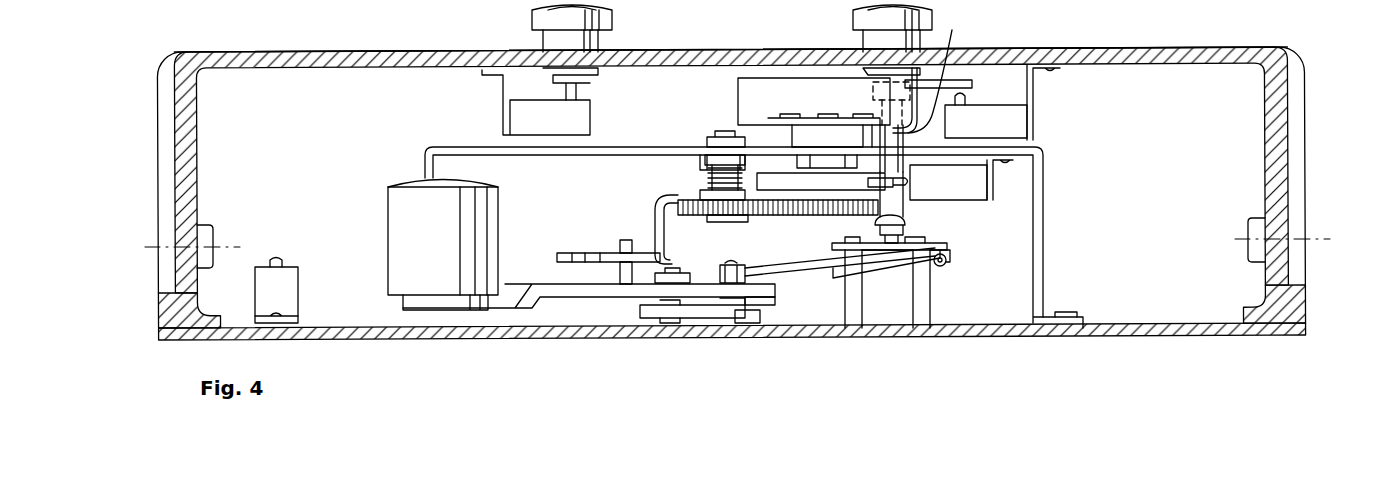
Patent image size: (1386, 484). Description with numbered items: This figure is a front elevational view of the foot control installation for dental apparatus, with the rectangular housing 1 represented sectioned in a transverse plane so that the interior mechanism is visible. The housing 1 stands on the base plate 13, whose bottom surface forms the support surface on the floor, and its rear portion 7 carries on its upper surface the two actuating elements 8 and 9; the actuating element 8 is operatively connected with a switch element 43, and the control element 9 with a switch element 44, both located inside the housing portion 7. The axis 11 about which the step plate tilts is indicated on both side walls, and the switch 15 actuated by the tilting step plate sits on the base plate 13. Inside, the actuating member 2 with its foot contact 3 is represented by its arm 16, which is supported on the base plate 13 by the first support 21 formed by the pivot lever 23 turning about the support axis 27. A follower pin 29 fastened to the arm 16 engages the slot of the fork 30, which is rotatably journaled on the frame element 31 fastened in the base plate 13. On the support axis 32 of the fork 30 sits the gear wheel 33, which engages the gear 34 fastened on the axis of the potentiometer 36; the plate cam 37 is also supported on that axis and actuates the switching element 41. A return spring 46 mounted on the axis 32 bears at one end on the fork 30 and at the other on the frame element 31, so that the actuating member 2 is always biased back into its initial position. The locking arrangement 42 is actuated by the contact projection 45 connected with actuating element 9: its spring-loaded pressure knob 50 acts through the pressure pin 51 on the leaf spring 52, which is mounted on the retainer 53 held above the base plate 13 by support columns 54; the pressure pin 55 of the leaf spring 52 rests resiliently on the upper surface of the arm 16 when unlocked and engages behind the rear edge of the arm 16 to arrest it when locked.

The housing 1 is at (742, 187).
The actuating member 2 is at (548, 300).
The foot contact 3 is at (388, 213).
The rear portion of the housing 7 is at (1112, 52).
The actuating element 8 is at (537, 20).
The actuating element 9 is at (858, 17).
The axis 11 is at (228, 244).
The base plate 13 is at (1143, 334).
The switch 15 is at (288, 288).
The arm 16 is at (765, 290).
The first support 21 is at (677, 270).
The pivot lever 23 is at (685, 322).
The support axis 27 is at (740, 325).
The follower pin 29 is at (620, 242).
The fork 30 is at (647, 250).
The frame element 31 is at (470, 148).
The support axis 32 is at (722, 132).
The gear wheel 33 is at (738, 222).
The gear 34 is at (808, 216).
The potentiometer 36 is at (738, 90).
The plate cam 37 is at (878, 188).
The switching element 41 is at (975, 200).
The locking arrangement 42 is at (905, 296).
The switch element 43 is at (578, 115).
The switch element 44 is at (1025, 117).
The contact projection 45 is at (938, 71).
The return spring 46 is at (705, 175).
The pressure knob 50 is at (905, 230).
The pressure pin 51 is at (948, 262).
The leaf spring 52 is at (790, 268).
The retainer 53 is at (950, 255).
The support columns 54 is at (855, 300).
The pressure pin 55 is at (722, 268).